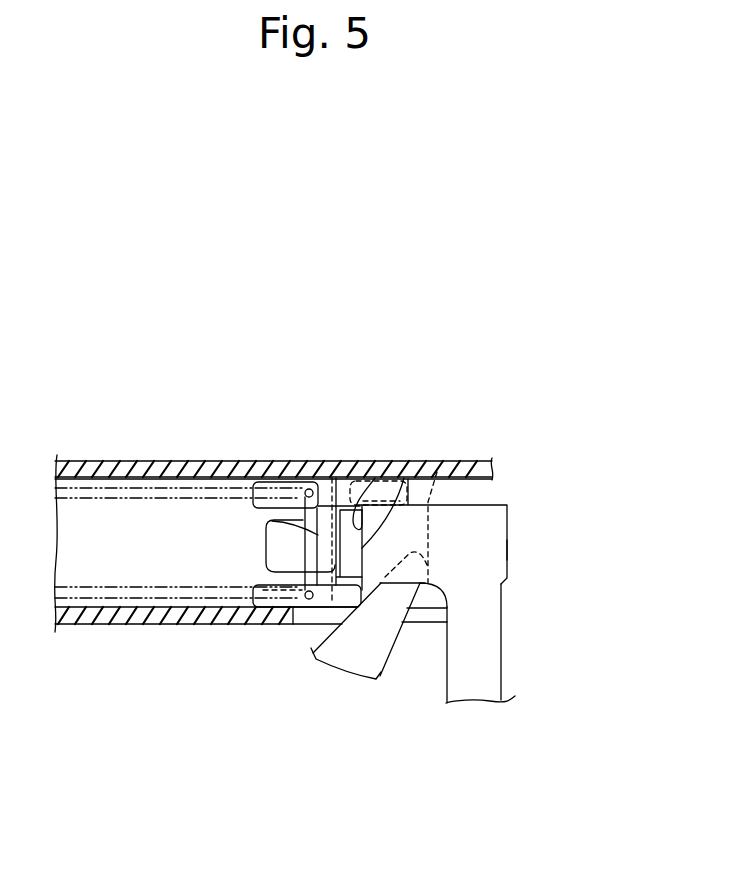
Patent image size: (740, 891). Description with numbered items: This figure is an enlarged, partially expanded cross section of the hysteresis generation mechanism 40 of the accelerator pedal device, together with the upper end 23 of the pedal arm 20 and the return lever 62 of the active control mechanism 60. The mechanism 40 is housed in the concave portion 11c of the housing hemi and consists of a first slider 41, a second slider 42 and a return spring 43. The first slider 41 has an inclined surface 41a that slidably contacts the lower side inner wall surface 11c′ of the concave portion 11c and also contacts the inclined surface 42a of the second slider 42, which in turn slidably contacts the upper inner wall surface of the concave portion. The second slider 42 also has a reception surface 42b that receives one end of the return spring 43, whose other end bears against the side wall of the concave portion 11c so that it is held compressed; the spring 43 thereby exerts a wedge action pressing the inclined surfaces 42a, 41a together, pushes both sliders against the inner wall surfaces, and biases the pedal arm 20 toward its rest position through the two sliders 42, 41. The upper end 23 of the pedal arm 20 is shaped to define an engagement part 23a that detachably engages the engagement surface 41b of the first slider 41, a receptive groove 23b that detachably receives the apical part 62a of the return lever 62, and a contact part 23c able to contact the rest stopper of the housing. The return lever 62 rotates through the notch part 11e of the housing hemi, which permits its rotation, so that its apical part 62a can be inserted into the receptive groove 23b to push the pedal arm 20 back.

The concave portion 11c is at (168, 557).
The lower side inner wall surface 11c′ is at (202, 604).
The notch part 11e is at (294, 620).
The pedal arm 20 is at (508, 673).
The upper end 23 is at (464, 515).
The engagement part 23a is at (375, 478).
The receptive groove 23b is at (437, 472).
The contact part 23c is at (507, 553).
The hysteresis generation mechanism 40 is at (290, 541).
The first slider 41 is at (313, 606).
The inclined surface 41a is at (334, 478).
The engagement surface 41b is at (404, 478).
The second slider 42 is at (336, 478).
The inclined surface 42a is at (352, 478).
The reception surface 42b is at (267, 533).
The return spring 43 is at (177, 488).
The active control mechanism 60 is at (412, 679).
The return lever 62 is at (383, 657).
The apical part 62a is at (419, 585).